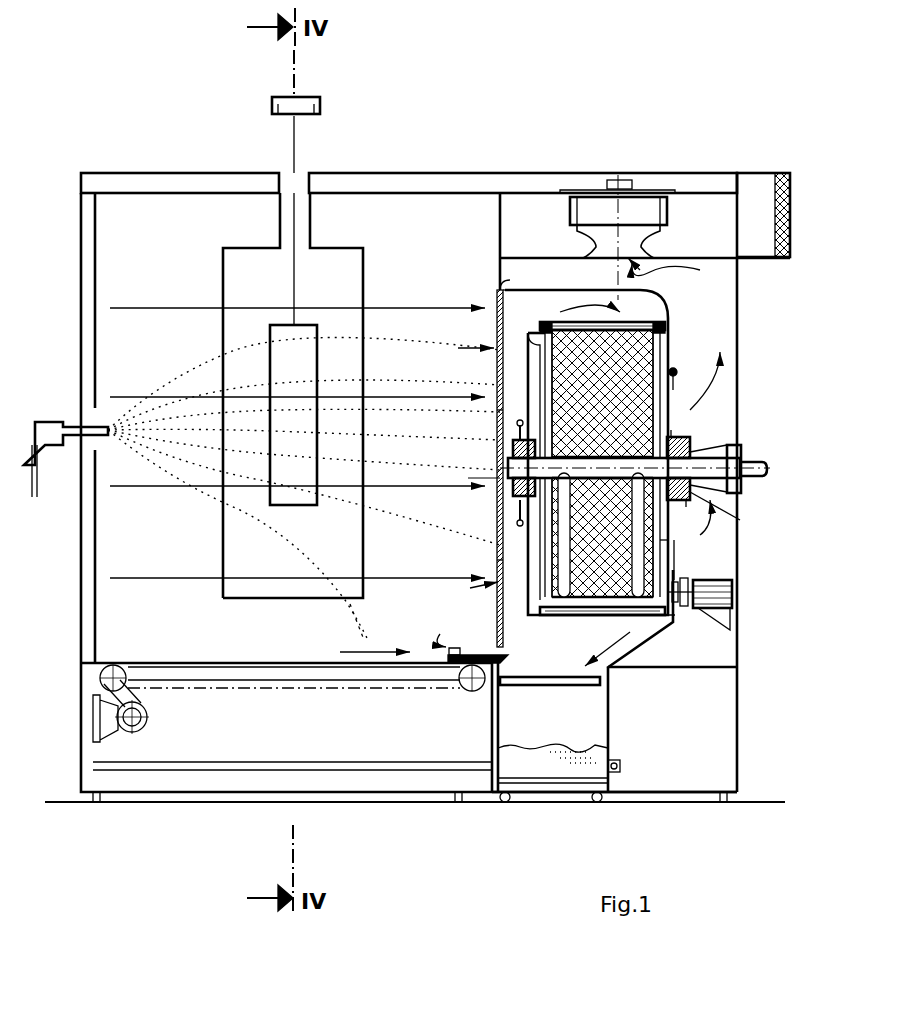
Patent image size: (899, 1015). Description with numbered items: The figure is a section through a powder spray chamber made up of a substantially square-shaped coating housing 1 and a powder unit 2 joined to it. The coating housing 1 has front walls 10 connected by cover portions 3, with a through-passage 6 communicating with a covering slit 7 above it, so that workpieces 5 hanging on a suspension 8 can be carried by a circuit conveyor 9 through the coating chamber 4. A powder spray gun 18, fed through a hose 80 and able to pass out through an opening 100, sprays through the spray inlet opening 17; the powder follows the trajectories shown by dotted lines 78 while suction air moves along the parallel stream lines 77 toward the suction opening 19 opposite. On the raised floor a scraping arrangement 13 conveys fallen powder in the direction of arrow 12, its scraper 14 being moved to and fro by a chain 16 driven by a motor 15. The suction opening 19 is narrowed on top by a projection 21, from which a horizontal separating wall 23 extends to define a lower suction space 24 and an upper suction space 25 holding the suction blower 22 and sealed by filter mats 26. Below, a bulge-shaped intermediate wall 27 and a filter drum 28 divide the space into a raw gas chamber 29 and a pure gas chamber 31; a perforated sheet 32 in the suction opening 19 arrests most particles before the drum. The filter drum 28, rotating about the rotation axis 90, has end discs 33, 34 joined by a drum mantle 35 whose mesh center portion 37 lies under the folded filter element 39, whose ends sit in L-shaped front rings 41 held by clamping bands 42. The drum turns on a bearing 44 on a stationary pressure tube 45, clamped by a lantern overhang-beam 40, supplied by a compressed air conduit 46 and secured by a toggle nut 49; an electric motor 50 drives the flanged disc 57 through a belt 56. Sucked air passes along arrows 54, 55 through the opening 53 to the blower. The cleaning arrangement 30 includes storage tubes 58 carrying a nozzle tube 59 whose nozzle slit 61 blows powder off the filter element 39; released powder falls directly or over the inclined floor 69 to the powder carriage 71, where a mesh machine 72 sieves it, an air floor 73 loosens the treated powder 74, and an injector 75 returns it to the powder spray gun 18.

The coating housing 1 is at (92, 172).
The powder unit 2 is at (684, 170).
The cover portions 3 is at (165, 183).
The coating chamber 4 is at (286, 439).
The workpieces 5 is at (293, 415).
The through-passage 6 is at (293, 395).
The covering slit 7 is at (298, 232).
The suspension 8 is at (296, 132).
The circuit conveyor 9 is at (305, 98).
The front walls 10 is at (133, 210).
The arrow 12 is at (395, 652).
The scraping arrangement 13 is at (446, 627).
The scraper 14 is at (470, 657).
The motor 15 is at (139, 730).
The chain 16 is at (352, 690).
The spray inlet opening 17 is at (90, 283).
The powder spray gun 18 is at (50, 458).
The suction opening 19 is at (497, 295).
The projection 21 is at (497, 262).
The suction blower 22 is at (617, 237).
The horizontal separating wall 23 is at (575, 258).
The lower suction space 24 is at (586, 291).
The upper suction space 25 is at (618, 235).
The filter mats 26 is at (775, 240).
The intermediate wall 27 is at (680, 270).
The filter drum 28 is at (476, 348).
The raw gas chamber 29 is at (600, 455).
The cleaning arrangement 30 is at (497, 563).
The pure gas chamber 31 is at (700, 275).
The perforated sheet 32 is at (508, 462).
The end disc 33 is at (497, 410).
The end disc 34 is at (668, 350).
The drum mantle 35 is at (540, 345).
The center portion 37 is at (540, 400).
The filter element 39 is at (612, 302).
The lantern overhang-beam 40 is at (700, 452).
The front rings 41 is at (540, 322).
The clamping bands 42 is at (540, 327).
The bearing 44 is at (670, 437).
The pressure tube 45 is at (540, 500).
The compressed air conduit 46 is at (748, 458).
The toggle nut 49 is at (515, 500).
The electric motor 50 is at (726, 586).
The opening 53 is at (676, 385).
The arrow 54 is at (726, 372).
The arrow 55 is at (640, 270).
The belt 56 is at (674, 572).
The flanged disc 57 is at (725, 500).
The storage tubes 58 is at (562, 540).
The nozzle tube 59 is at (500, 575).
The nozzle slit 61 is at (648, 617).
The inclined floor 69 is at (650, 640).
The powder carriage 71 is at (614, 727).
The mesh machine 72 is at (538, 685).
The air floor 73 is at (506, 778).
The treated powder 74 is at (600, 752).
The injector 75 is at (620, 766).
The stream lines 77 is at (152, 308).
The dotted lines 78 is at (196, 372).
The hose 80 is at (28, 495).
The rotation axis 90 is at (468, 478).
The opening 100 is at (737, 740).